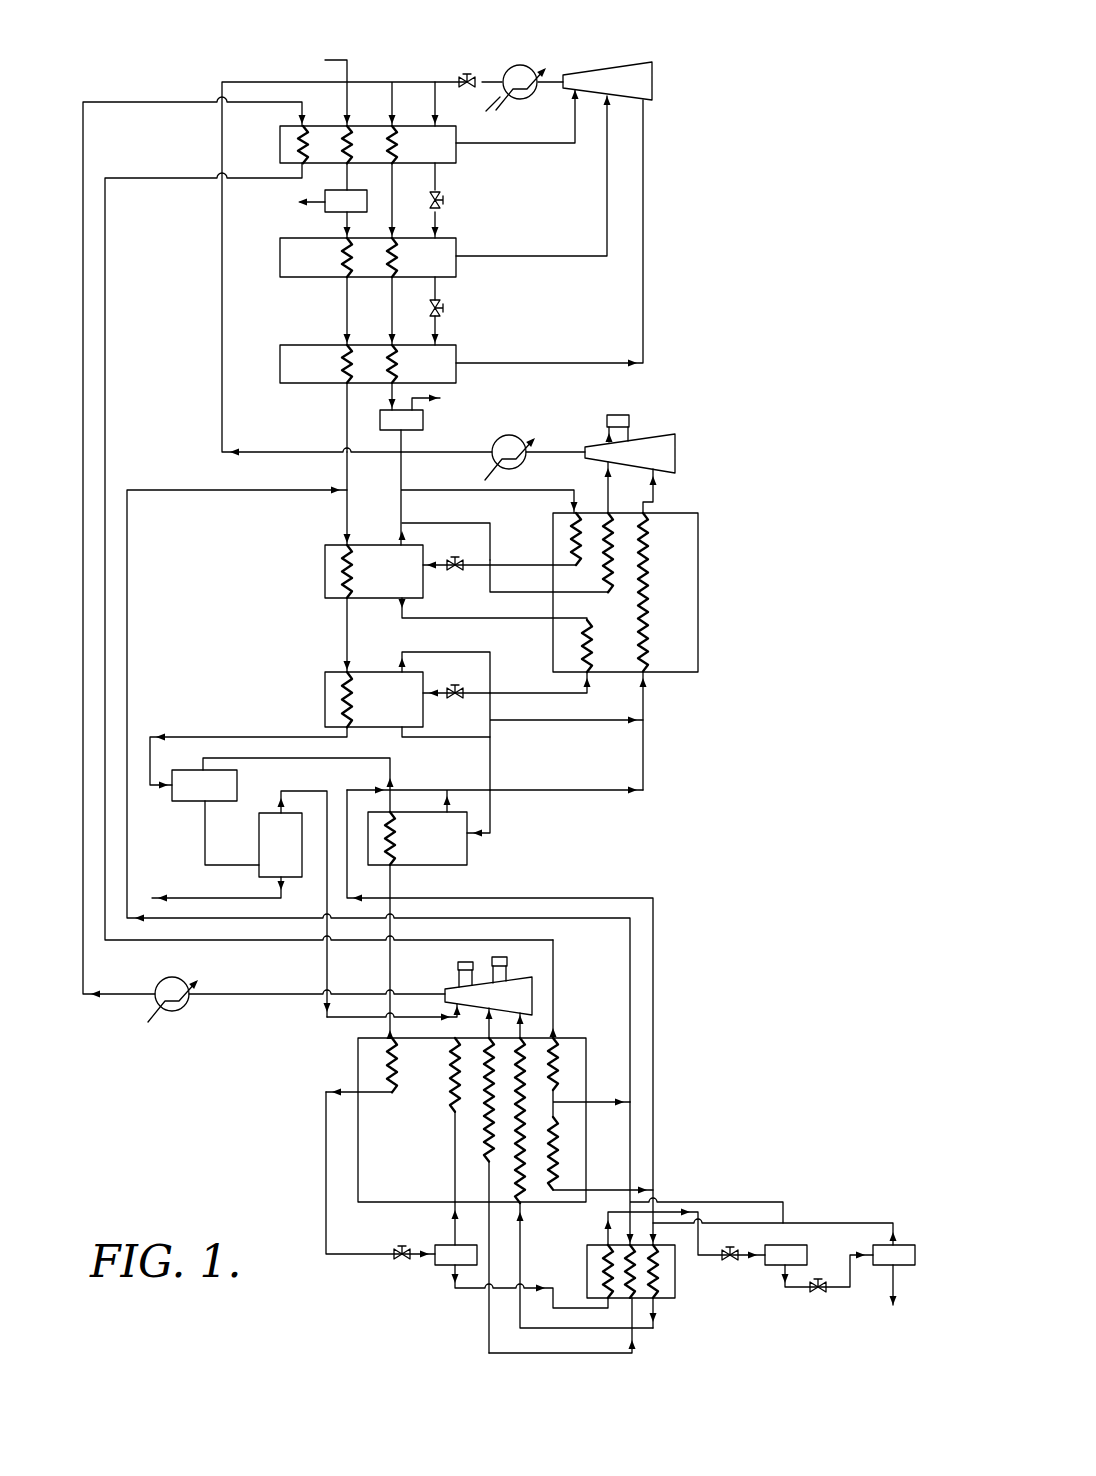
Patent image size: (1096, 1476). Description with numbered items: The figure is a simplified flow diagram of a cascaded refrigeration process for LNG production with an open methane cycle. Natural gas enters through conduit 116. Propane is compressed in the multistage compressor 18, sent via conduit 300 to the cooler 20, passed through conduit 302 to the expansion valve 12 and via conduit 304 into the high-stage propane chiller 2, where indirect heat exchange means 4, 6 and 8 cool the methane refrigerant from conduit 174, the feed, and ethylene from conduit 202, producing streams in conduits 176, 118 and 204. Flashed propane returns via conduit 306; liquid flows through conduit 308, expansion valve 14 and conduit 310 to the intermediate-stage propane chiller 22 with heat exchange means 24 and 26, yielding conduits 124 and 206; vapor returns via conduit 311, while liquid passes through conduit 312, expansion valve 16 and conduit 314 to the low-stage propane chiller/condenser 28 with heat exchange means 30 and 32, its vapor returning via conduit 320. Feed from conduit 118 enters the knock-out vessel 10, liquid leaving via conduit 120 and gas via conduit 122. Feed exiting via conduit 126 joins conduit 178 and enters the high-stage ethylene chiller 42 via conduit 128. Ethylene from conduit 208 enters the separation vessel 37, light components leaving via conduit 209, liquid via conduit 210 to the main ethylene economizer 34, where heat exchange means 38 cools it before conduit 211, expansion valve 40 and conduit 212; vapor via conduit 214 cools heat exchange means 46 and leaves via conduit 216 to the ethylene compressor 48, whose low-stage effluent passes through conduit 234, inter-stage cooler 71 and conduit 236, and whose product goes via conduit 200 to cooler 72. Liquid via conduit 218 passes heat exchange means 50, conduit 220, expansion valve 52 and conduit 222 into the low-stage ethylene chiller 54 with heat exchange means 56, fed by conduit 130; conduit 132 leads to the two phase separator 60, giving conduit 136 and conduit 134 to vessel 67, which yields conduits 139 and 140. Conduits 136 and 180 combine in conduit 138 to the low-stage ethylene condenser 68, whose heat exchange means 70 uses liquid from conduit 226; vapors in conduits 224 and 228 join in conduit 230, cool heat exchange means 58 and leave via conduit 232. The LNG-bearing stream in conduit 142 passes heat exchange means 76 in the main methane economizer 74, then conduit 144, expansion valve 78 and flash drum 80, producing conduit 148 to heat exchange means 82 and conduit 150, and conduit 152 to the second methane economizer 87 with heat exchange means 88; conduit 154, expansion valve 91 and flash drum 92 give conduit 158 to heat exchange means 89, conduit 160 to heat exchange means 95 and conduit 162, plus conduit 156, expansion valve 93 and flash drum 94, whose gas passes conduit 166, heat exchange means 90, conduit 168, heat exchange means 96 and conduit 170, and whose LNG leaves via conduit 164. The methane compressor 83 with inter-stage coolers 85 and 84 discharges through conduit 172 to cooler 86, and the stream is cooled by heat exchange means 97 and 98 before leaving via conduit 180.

The high-stage propane chiller 2 is at (280, 143).
The indirect heat exchange means 4 is at (309, 149).
The indirect heat exchange means 6 is at (352, 149).
The indirect heat exchange means 8 is at (398, 148).
The knock-out vessel 10 is at (352, 212).
The expansion valve 12 is at (493, 117).
The expansion valve 14 is at (445, 203).
The expansion valve 16 is at (444, 310).
The multistage compressor 18 is at (655, 83).
The cooler 20 is at (517, 64).
The intermediate-stage propane chiller 22 is at (280, 258).
The indirect heat exchange means 24 is at (342, 260).
The indirect heat exchange means 26 is at (398, 257).
The low-stage propane chiller/condenser 28 is at (280, 366).
The indirect heat exchange means 30 is at (342, 366).
The indirect heat exchange means 32 is at (398, 364).
The main ethylene economizer 34 is at (698, 592).
The separation vessel 37 is at (423, 422).
The indirect heat exchange means 38 is at (570, 540).
The expansion valve 40 is at (462, 574).
The high-stage ethylene chiller 42 is at (325, 578).
The indirect heat exchange means 46 is at (603, 578).
The ethylene compressor 48 is at (657, 436).
The indirect heat exchange means 50 is at (591, 645).
The expansion valve 52 is at (458, 700).
The low-stage ethylene chiller 54 is at (325, 706).
The indirect heat exchange means 56 is at (352, 700).
The indirect heat exchange means 58 is at (648, 645).
The two phase separator 60 is at (237, 782).
The vessel 67 is at (259, 845).
The low-stage ethylene condenser 68 is at (467, 857).
The indirect heat exchange means 70 is at (396, 840).
The inter-stage cooler 71 is at (617, 413).
The cooler 72 is at (508, 435).
The main methane economizer 74 is at (358, 1060).
The indirect heat exchange means 76 is at (397, 1064).
The expansion valve 78 is at (388, 1250).
The methane high-stage flash drum 80 is at (440, 1267).
The indirect heat exchange means 82 is at (452, 1105).
The methane compressor 83 is at (515, 977).
The inter-stage cooler 84 is at (461, 962).
The inter-stage cooler 85 is at (498, 957).
The cooler 86 is at (160, 985).
The second methane economizer 87 is at (677, 1280).
The indirect heat exchange means 88 is at (600, 1290).
The indirect heat exchange means 89 is at (645, 1326).
The indirect heat exchange means 90 is at (662, 1300).
The expansion valve 91 is at (732, 1265).
The intermediate-stage methane flash drum 92 is at (807, 1255).
The expansion valve 93 is at (818, 1297).
The low stage flash drum 94 is at (900, 1245).
The indirect heat exchange means 95 is at (482, 1155).
The indirect heat exchange means 96 is at (537, 1170).
The indirect heat exchange means 97 is at (560, 1068).
The indirect heat transfer means 98 is at (560, 1135).
The conduit 116 is at (325, 58).
The conduit 118 is at (345, 177).
The conduit 120 is at (287, 203).
The conduit 122 is at (345, 222).
The conduit 124 is at (345, 325).
The conduit 126 is at (346, 425).
The conduit 128 is at (345, 520).
The conduit 130 is at (345, 648).
The conduit 132 is at (235, 737).
The conduit 134 is at (205, 840).
The conduit 136 is at (392, 778).
The conduit 138 is at (392, 792).
The conduit 139 is at (167, 898).
The conduit 140 is at (326, 985).
The conduit 142 is at (392, 878).
The conduit 144 is at (324, 1170).
The conduit 148 is at (452, 1225).
The conduit 150 is at (447, 1016).
The conduit 152 is at (455, 1292).
The conduit 154 is at (607, 1235).
The conduit 156 is at (785, 1300).
The conduit 158 is at (742, 1202).
The conduit 160 is at (490, 1337).
The conduit 162 is at (486, 1026).
The conduit 164 is at (890, 1300).
The conduit 166 is at (856, 1223).
The conduit 168 is at (523, 1245).
The conduit 170 is at (556, 1030).
The conduit 172 is at (280, 998).
The conduit 174 is at (109, 998).
The conduit 176 is at (107, 412).
The conduit 178 is at (594, 920).
The conduit 180 is at (655, 975).
The conduit 200 is at (558, 452).
The conduit 202 is at (293, 455).
The conduit 204 is at (393, 220).
The conduit 206 is at (390, 290).
The conduit 208 is at (390, 390).
The conduit 209 is at (449, 401).
The conduit 210 is at (420, 492).
The conduit 211 is at (513, 572).
The conduit 212 is at (450, 560).
The conduit 214 is at (490, 525).
The conduit 216 is at (605, 488).
The conduit 218 is at (420, 620).
The conduit 220 is at (513, 693).
The conduit 222 is at (450, 688).
The conduit 224 is at (595, 722).
The conduit 226 is at (490, 785).
The conduit 228 is at (594, 792).
The conduit 230 is at (645, 702).
The conduit 232 is at (658, 497).
The conduit 234 is at (632, 425).
The conduit 236 is at (608, 425).
The conduit 300 is at (553, 70).
The conduit 302 is at (486, 80).
The conduit 304 is at (434, 80).
The conduit 306 is at (544, 142).
The conduit 308 is at (440, 183).
The conduit 310 is at (440, 228).
The conduit 311 is at (542, 256).
The conduit 312 is at (440, 292).
The conduit 314 is at (440, 332).
The conduit 320 is at (644, 215).